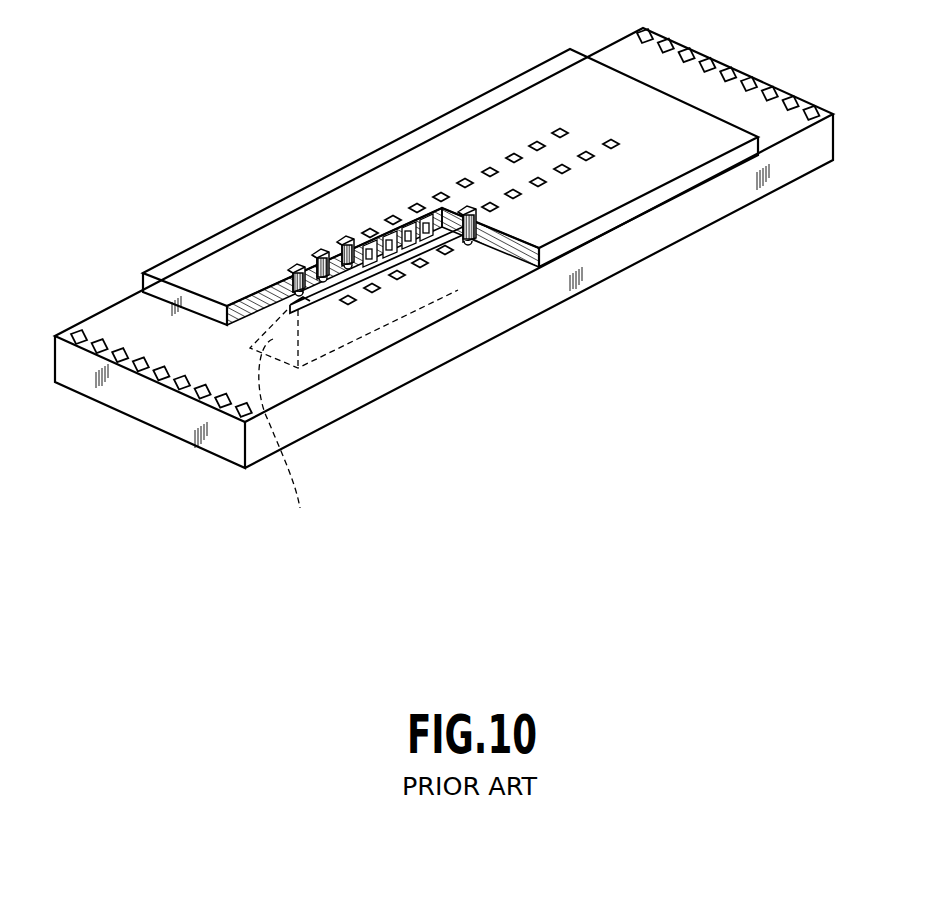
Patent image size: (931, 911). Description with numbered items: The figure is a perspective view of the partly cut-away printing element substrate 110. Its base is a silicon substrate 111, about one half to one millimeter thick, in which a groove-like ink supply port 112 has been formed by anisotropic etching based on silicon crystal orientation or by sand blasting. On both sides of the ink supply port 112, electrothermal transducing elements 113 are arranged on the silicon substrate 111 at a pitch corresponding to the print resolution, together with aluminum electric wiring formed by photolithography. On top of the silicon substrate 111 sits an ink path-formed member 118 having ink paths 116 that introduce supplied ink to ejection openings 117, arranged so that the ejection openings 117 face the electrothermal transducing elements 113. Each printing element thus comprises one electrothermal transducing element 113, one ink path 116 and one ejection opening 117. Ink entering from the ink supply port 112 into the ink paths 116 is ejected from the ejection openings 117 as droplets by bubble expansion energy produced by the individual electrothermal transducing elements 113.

The printing element substrate 110 is at (444, 248).
The silicon substrate 111 is at (692, 210).
The ink supply port 112 is at (289, 441).
The electrothermal transducing elements 113 is at (303, 292).
The ink paths 116 is at (392, 259).
The ejection openings 117 is at (367, 233).
The ink path-formed member 118 is at (498, 115).